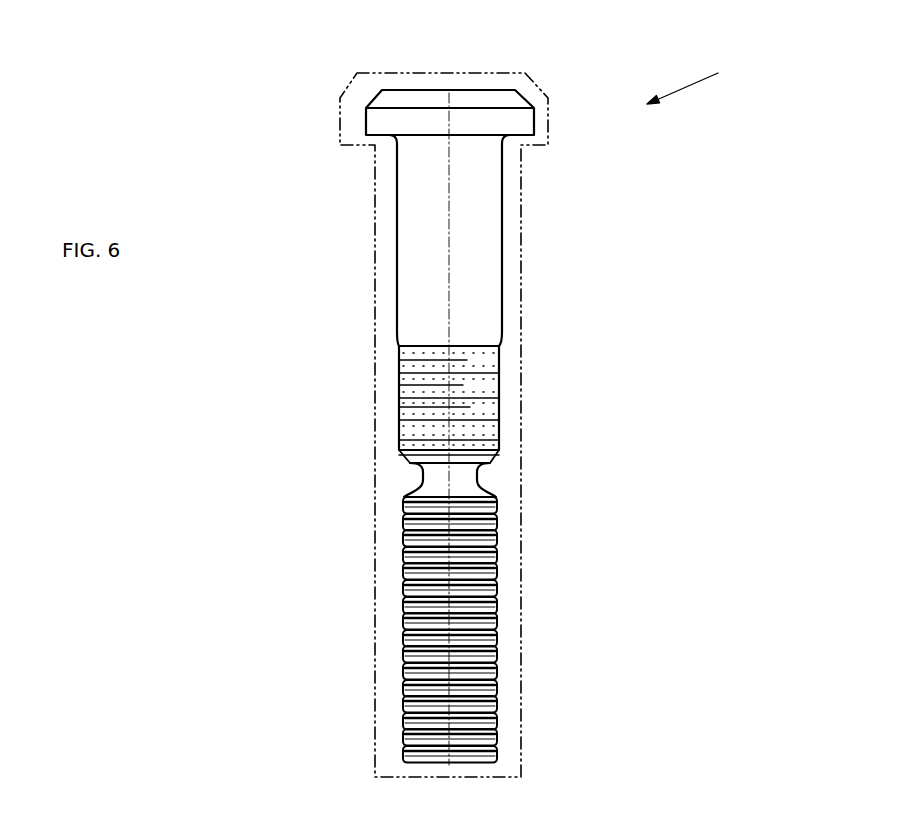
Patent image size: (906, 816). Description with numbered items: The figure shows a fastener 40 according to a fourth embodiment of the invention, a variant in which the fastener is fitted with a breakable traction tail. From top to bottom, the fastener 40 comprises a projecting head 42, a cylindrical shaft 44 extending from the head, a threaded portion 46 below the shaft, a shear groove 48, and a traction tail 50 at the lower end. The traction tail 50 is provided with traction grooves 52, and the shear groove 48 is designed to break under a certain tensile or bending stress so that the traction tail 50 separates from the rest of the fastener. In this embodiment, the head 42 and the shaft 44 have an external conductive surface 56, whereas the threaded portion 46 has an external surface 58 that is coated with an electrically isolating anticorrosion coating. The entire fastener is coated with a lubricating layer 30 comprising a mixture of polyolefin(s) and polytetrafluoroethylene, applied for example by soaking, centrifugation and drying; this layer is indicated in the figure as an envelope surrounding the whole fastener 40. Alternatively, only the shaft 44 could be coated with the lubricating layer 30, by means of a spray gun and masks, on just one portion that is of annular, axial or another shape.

The lubricating layer 30 is at (377, 361).
The fastener 40 is at (702, 76).
The projecting head 42 is at (403, 90).
The cylindrical shaft 44 is at (397, 257).
The threaded portion 46 is at (462, 430).
The shear groove 48 is at (417, 470).
The traction tail 50 is at (403, 625).
The traction grooves 52 is at (480, 665).
The external conductive surface 56 is at (478, 278).
The external surface 58 is at (490, 388).